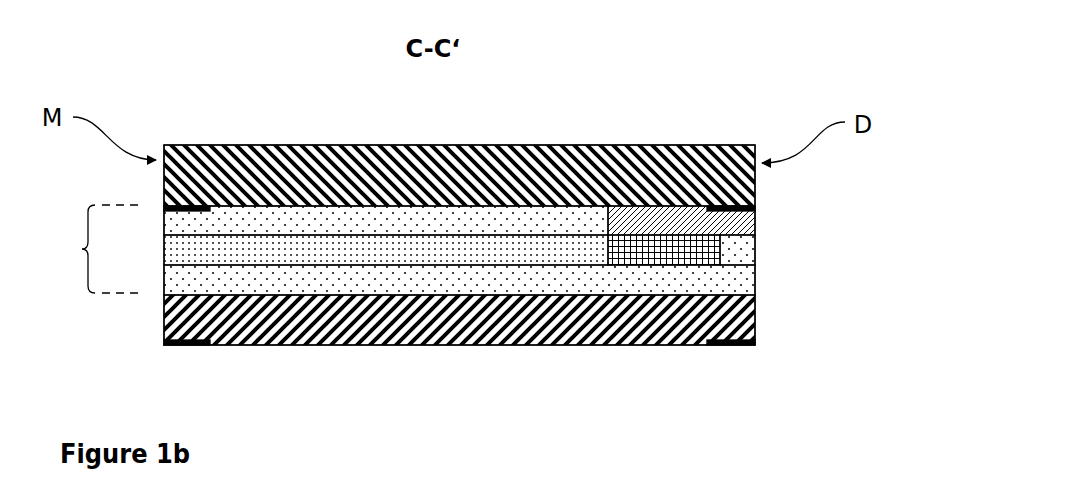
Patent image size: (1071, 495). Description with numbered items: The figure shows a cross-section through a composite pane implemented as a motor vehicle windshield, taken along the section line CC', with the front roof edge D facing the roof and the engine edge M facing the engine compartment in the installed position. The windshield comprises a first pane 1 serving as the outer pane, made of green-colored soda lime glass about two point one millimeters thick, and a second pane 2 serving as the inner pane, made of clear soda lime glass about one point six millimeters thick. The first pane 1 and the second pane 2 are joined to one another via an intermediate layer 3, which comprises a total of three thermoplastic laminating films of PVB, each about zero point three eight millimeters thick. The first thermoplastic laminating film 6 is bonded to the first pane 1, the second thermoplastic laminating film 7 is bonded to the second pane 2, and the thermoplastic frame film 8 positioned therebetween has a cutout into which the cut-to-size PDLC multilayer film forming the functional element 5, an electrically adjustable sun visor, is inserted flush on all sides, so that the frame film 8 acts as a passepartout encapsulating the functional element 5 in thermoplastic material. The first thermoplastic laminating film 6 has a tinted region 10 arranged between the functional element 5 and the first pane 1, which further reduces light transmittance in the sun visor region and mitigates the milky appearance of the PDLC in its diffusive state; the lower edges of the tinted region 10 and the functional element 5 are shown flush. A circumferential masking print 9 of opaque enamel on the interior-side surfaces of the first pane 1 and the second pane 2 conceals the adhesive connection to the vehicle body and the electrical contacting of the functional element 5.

The first pane 1 is at (175, 152).
The second pane 2 is at (241, 330).
The intermediate layer 3 is at (102, 249).
The functional element 5 is at (710, 253).
The first thermoplastic laminating film 6 is at (170, 218).
The second thermoplastic laminating film 7 is at (742, 282).
The thermoplastic frame film 8 is at (188, 242).
The masking print 9 is at (757, 203).
The tinted region 10 is at (742, 221).